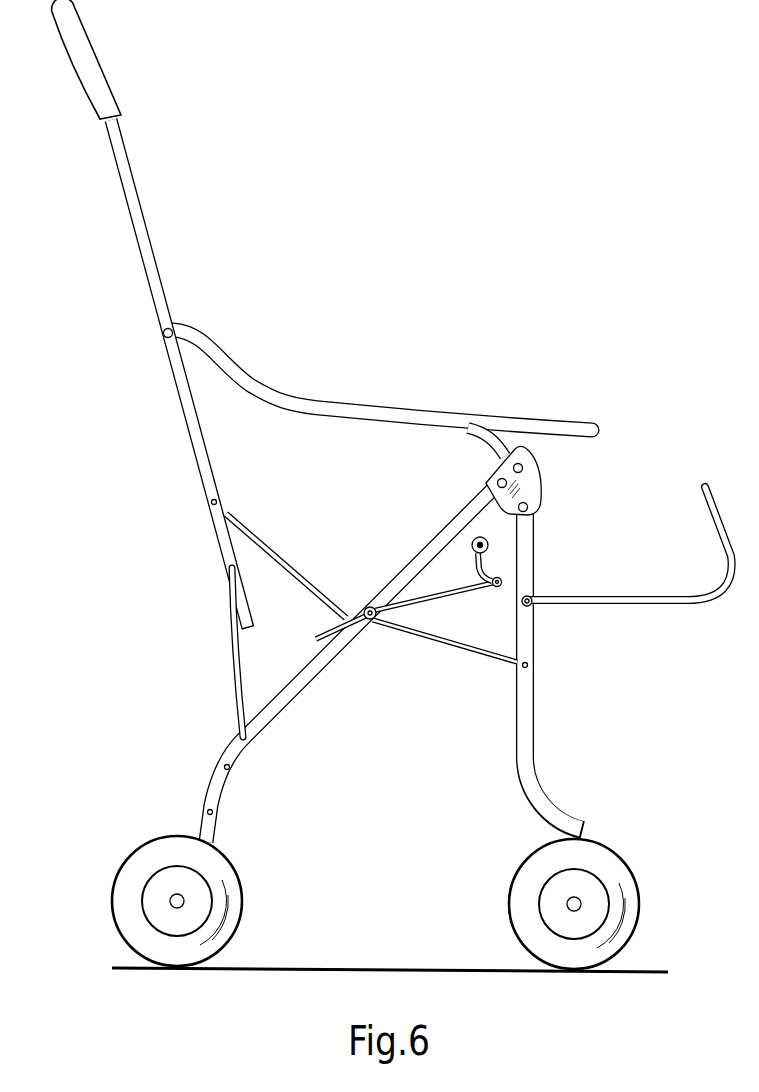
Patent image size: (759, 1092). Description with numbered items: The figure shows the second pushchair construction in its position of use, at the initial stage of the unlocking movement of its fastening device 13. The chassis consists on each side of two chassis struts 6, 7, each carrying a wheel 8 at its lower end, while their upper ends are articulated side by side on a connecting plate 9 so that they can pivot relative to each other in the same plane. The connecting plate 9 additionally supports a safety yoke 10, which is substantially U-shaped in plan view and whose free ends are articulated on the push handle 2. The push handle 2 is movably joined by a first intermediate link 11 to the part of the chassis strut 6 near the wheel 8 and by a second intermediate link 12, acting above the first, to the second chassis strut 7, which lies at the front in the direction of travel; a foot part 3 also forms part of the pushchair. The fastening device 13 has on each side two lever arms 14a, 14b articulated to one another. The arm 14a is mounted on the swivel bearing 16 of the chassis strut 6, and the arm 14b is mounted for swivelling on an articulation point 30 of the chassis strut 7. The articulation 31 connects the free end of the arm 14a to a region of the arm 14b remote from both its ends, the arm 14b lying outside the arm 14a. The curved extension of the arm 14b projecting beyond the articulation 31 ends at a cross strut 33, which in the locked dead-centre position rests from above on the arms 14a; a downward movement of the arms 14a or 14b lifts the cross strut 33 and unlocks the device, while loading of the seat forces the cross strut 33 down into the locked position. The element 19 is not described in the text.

The push handle 2 is at (143, 250).
The foot part 3 is at (645, 598).
The chassis strut 6 is at (222, 780).
The chassis strut 7 is at (532, 756).
The wheel 8 is at (222, 888).
The connecting plate 9 is at (524, 478).
The safety yoke 10 is at (334, 404).
The first intermediate link 11 is at (231, 668).
The second intermediate link 12 is at (252, 546).
The fastening device 13 is at (468, 602).
The lever arm 14a is at (402, 603).
The lever arm 14b is at (472, 557).
The swivel bearing 16 is at (373, 625).
The link 19 is at (322, 628).
The articulation point 30 is at (531, 594).
The articulation 31 is at (488, 597).
The cross strut 33 is at (475, 538).